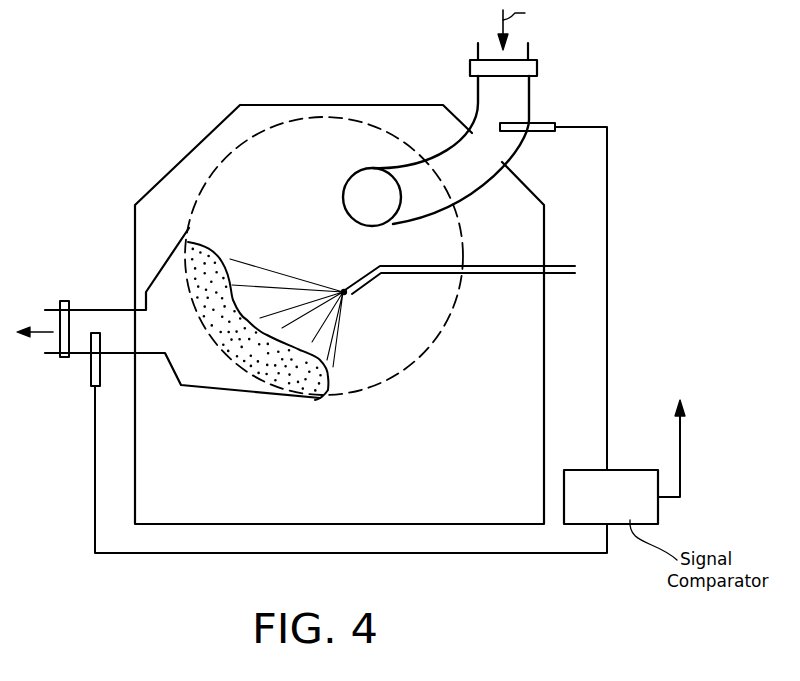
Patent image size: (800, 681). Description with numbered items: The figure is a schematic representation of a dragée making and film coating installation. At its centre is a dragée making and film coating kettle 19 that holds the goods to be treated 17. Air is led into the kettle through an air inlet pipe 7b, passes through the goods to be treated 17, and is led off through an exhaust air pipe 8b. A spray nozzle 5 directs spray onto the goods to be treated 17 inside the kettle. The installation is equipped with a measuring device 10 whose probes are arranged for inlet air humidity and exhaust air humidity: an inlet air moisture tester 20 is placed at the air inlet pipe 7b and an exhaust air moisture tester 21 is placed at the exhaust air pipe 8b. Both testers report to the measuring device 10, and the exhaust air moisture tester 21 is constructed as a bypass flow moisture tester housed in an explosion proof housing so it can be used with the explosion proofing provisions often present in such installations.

The spray nozzle 5 is at (357, 288).
The air inlet pipe 7b is at (540, 93).
The exhaust air pipe 8b is at (80, 303).
The measuring device 10 is at (527, 466).
The goods to be treated 17 is at (268, 362).
The dragée making and film coating kettle 19 is at (373, 125).
The inlet air moisture tester 20 is at (540, 131).
The exhaust air moisture tester 21 is at (92, 372).